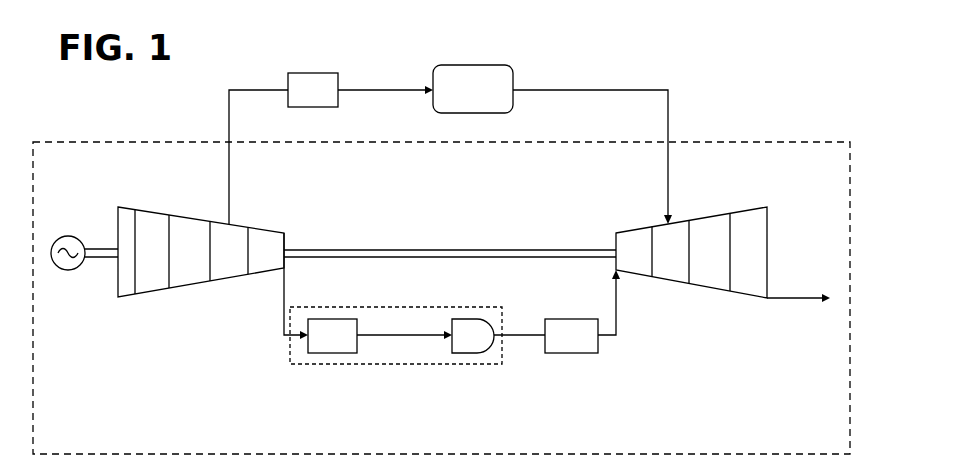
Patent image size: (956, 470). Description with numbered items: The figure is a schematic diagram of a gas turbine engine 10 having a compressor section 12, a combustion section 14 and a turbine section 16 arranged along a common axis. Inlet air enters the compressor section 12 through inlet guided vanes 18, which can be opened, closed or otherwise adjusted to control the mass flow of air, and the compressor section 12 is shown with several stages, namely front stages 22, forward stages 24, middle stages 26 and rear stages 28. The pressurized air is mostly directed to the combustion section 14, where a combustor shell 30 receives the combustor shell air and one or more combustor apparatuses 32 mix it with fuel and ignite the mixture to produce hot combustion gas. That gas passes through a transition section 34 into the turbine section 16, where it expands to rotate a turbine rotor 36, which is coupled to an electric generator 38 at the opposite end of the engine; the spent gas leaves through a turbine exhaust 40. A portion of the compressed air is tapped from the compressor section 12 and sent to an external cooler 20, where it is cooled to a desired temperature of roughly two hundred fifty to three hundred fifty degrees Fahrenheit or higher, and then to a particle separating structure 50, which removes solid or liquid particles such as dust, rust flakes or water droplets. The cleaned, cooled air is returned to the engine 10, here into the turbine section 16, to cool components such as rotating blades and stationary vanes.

The gas turbine engine 10 is at (697, 122).
The compressor section 12 is at (125, 306).
The combustion section 14 is at (502, 358).
The turbine section 16 is at (770, 202).
The inlet guided vanes 18 is at (127, 224).
The external cooler 20 is at (313, 72).
The front stages 22 is at (155, 284).
The forward stages 24 is at (193, 282).
The middle stages 26 is at (230, 276).
The rear stages 28 is at (263, 270).
The combustor shell 30 is at (337, 354).
The combustor apparatuses 32 is at (473, 354).
The transition section 34 is at (575, 354).
The turbine rotor 36 is at (562, 249).
The electric generator 38 is at (68, 236).
The turbine exhaust 40 is at (770, 300).
The particle separating structure 50 is at (473, 65).